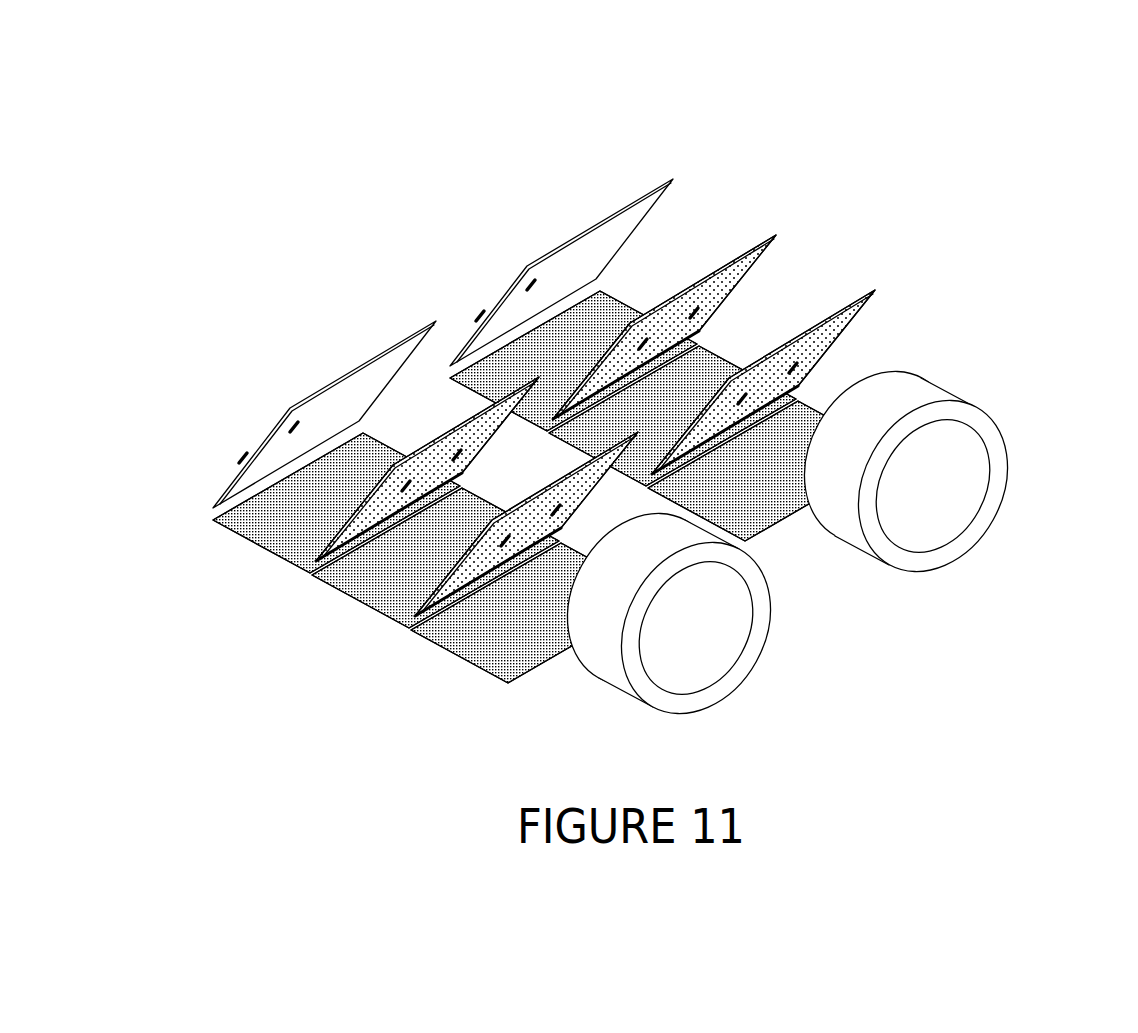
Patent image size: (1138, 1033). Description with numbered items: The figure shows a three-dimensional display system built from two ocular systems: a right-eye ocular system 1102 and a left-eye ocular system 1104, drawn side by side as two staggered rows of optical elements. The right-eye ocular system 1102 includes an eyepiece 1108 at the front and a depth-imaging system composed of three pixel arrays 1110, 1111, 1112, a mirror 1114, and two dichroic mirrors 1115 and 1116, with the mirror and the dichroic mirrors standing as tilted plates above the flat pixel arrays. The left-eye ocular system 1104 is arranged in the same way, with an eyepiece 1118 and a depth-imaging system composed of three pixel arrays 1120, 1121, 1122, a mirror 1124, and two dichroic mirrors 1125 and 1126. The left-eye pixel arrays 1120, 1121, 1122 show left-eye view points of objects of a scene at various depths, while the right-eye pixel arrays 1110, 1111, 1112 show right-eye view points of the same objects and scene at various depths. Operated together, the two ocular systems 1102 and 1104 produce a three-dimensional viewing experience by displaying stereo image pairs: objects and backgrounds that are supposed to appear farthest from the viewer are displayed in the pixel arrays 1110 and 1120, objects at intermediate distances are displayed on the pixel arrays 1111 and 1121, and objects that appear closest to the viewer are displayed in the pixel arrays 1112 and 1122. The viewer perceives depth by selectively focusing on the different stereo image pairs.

The right-eye ocular system 1102 is at (762, 338).
The left-eye ocular system 1104 is at (470, 515).
The eyepiece 1108 is at (924, 471).
The pixel array 1110 is at (627, 307).
The pixel array 1111 is at (728, 367).
The pixel array 1112 is at (828, 415).
The mirror 1114 is at (561, 252).
The dichroic mirror 1115 is at (731, 308).
The dichroic mirror 1116 is at (833, 359).
The eyepiece 1118 is at (643, 616).
The pixel array 1120 is at (300, 505).
The pixel array 1121 is at (410, 562).
The pixel array 1122 is at (508, 613).
The mirror 1124 is at (324, 397).
The dichroic mirror 1125 is at (497, 430).
The dichroic mirror 1126 is at (598, 488).